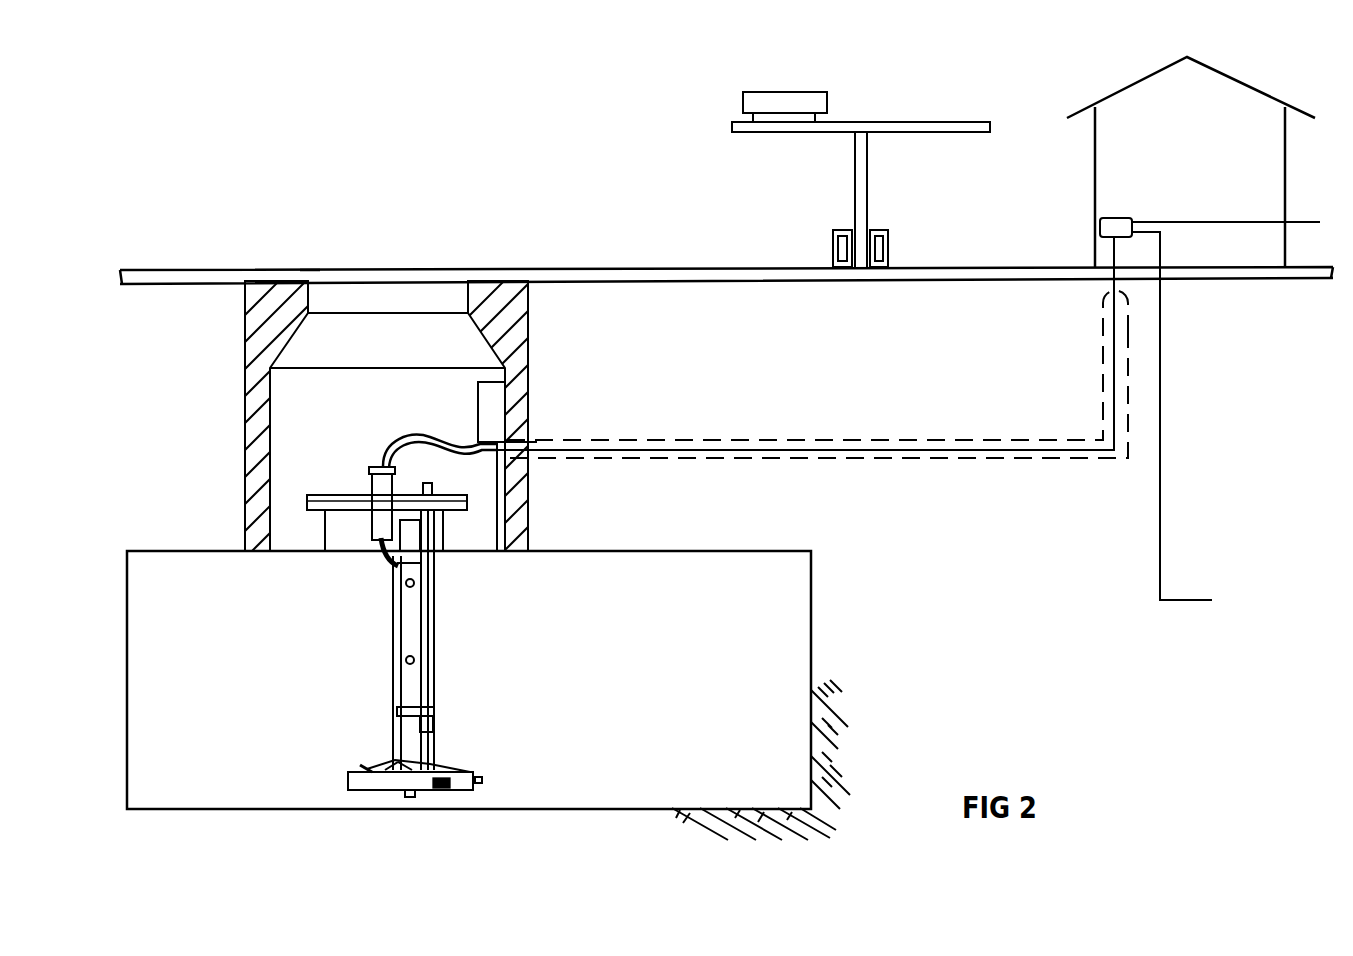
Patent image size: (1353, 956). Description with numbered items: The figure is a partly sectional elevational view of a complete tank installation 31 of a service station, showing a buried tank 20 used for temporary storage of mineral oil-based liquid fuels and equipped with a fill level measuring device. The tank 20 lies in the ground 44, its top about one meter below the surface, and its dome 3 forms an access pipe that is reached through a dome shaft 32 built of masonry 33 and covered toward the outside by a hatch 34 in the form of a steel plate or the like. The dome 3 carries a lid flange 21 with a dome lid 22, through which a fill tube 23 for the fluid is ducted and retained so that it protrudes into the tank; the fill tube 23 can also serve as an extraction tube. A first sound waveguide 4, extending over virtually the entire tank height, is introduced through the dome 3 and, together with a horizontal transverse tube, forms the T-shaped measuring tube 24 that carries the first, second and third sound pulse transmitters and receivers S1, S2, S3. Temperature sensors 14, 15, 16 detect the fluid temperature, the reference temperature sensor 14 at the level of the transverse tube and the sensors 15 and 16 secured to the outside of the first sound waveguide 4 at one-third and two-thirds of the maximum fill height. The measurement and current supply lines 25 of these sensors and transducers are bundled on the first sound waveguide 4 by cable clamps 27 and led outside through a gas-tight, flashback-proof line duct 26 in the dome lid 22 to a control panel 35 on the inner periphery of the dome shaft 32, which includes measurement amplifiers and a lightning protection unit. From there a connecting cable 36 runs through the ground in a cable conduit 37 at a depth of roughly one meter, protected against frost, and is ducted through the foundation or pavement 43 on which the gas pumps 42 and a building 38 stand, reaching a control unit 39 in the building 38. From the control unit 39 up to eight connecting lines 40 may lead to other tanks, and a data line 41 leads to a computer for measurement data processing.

The dome 3 is at (325, 528).
The first sound waveguide 4 is at (412, 615).
The temperature sensor 14 is at (457, 792).
The temperature sensor 15 is at (405, 660).
The temperature sensor 16 is at (400, 592).
The tank 20 is at (594, 808).
The lid flange 21 is at (307, 503).
The dome lid 22 is at (322, 493).
The fill tube 23 is at (423, 532).
The measuring tube 24 is at (452, 763).
The measurement and current supply lines 25 is at (418, 436).
The line duct 26 is at (377, 484).
The cable clamps 27 is at (423, 565).
The tank installation 31 is at (993, 654).
The dome shaft 32 is at (348, 423).
The masonry 33 is at (262, 348).
The hatch 34 is at (310, 270).
The control panel 35 is at (494, 403).
The connecting cable 36 is at (870, 453).
The cable conduit 37 is at (847, 438).
The building 38 is at (1093, 180).
The control unit 39 is at (1113, 218).
The connecting lines 40 is at (1163, 382).
The data line 41 is at (1202, 222).
The gas pumps 42 is at (853, 187).
The foundation 43 is at (952, 267).
The ground 44 is at (830, 738).
The first sound pulse transmitter and receiver S1 is at (410, 797).
The second sound pulse transmitter and receiver S2 is at (482, 779).
The third sound pulse transmitter and receiver S3 is at (367, 768).